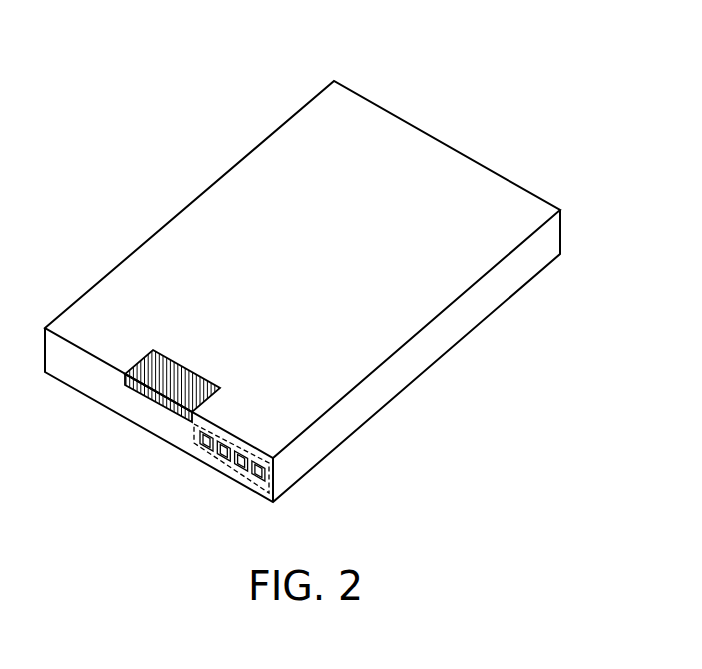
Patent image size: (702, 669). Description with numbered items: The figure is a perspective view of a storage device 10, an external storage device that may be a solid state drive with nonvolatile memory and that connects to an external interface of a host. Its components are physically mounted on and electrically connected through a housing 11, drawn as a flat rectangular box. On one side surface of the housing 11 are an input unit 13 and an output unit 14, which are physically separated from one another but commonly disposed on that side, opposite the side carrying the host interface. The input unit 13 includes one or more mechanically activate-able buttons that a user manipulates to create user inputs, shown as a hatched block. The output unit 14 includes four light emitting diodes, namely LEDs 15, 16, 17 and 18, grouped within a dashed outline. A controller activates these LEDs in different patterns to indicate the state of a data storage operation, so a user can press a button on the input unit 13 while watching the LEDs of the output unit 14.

The storage device 10 is at (258, 24).
The housing 11 is at (381, 94).
The input unit 13 is at (142, 391).
The output unit 14 is at (255, 489).
The LED 15 is at (203, 451).
The LED 16 is at (222, 459).
The LED 17 is at (240, 470).
The LED 18 is at (256, 484).